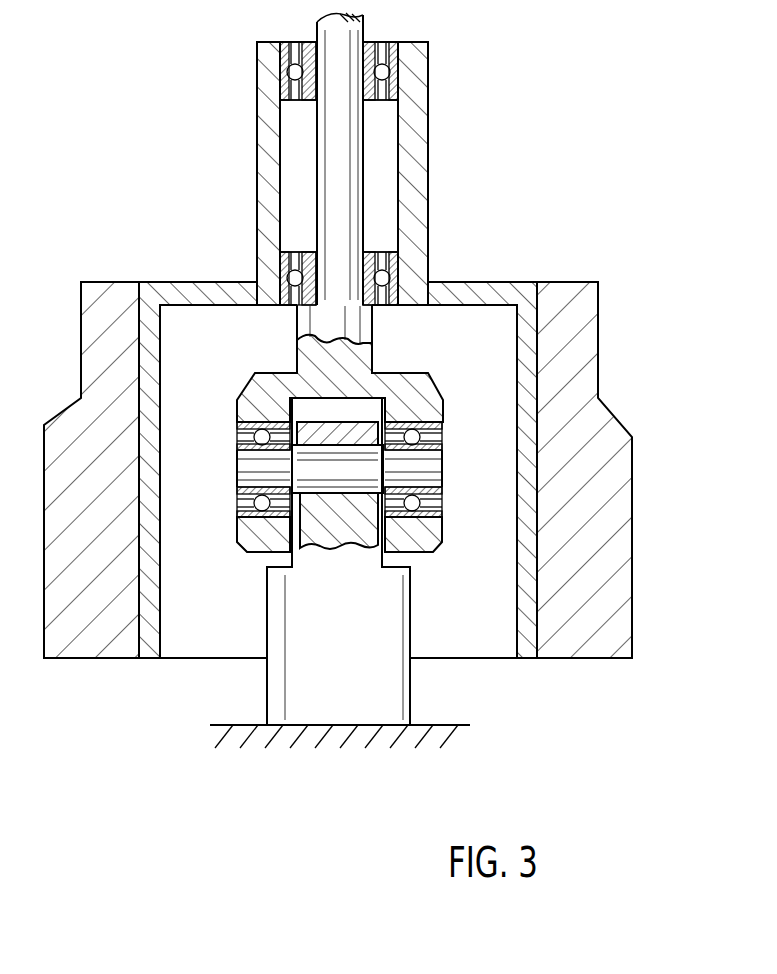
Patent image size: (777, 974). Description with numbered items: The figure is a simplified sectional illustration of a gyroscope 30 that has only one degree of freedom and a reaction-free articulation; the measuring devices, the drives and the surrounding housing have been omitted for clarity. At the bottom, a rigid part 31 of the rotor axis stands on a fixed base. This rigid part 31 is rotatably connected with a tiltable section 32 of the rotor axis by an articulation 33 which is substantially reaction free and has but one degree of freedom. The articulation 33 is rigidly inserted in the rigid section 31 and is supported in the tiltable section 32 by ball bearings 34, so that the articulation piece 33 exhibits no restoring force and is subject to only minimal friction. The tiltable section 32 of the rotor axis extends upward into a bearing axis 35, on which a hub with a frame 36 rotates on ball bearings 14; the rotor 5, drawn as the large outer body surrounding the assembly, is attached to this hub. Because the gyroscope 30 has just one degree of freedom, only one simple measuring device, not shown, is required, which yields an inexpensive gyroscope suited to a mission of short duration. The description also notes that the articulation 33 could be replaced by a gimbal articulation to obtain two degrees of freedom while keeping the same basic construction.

The rotor 5 is at (612, 488).
The ball bearings 14 is at (288, 73).
The gyroscope 30 is at (494, 226).
The rigid part of the rotor axis 31 is at (298, 663).
The tiltable section of the rotor axis 32 is at (345, 365).
The articulation 33 is at (353, 480).
The ball bearings 34 is at (238, 493).
The bearing axis 35 is at (333, 148).
The frame 36 is at (415, 175).